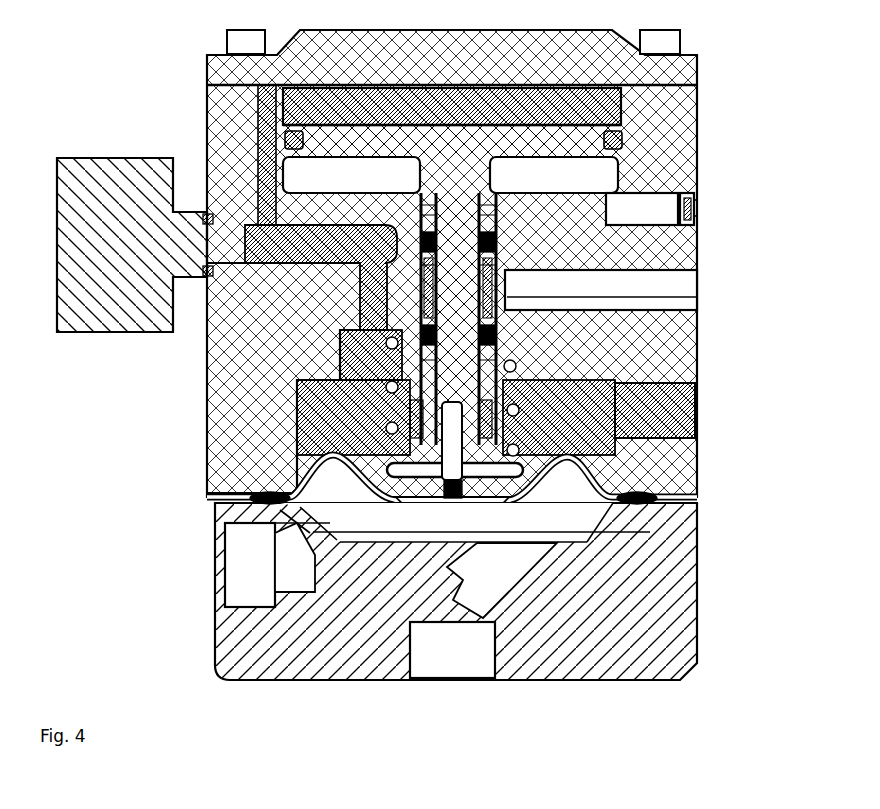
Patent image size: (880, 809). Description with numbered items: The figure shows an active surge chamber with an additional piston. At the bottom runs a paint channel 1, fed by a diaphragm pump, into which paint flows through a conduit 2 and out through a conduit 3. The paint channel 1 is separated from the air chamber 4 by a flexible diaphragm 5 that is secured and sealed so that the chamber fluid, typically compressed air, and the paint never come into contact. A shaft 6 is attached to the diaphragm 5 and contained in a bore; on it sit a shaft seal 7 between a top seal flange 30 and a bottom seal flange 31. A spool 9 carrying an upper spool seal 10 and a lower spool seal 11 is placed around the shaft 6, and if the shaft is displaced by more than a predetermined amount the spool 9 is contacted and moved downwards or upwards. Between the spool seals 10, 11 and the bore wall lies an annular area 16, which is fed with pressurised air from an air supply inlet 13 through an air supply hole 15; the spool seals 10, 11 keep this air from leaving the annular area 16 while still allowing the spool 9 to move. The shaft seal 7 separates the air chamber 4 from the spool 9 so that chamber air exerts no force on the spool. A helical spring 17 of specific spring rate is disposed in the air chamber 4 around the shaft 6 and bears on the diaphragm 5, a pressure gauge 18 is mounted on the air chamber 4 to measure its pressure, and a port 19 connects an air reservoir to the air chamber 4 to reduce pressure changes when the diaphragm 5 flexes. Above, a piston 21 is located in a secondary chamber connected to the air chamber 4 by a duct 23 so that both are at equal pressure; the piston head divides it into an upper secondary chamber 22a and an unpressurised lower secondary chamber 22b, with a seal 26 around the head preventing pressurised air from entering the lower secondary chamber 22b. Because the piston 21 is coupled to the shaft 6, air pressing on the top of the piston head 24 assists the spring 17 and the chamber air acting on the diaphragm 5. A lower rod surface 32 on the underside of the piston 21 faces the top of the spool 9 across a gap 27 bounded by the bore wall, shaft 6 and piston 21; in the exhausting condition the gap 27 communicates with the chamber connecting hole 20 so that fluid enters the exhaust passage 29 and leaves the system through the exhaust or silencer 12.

The paint channel 1 is at (452, 493).
The conduit 2 is at (483, 610).
The conduit 3 is at (270, 558).
The air chamber 4 is at (559, 418).
The flexible diaphragm 5 is at (470, 456).
The shaft 6 is at (457, 298).
The shaft seal 7 is at (517, 369).
The spool 9 is at (697, 297).
The upper spool seal 10 is at (496, 238).
The lower spool seal 11 is at (500, 332).
The exhaust 12 is at (697, 208).
The air supply inlet 13 is at (601, 290).
The air supply hole 15 is at (500, 292).
The annular area 16 is at (302, 277).
The spring 17 is at (390, 386).
The pressure gauge 18 is at (135, 245).
The port 19 is at (655, 410).
The chamber connecting hole 20 is at (418, 243).
The piston 21 is at (452, 141).
The upper secondary chamber 22a is at (452, 106).
The lower secondary chamber 22b is at (554, 175).
The duct 23 is at (258, 163).
The top of the piston head 24 is at (457, 126).
The seal 26 is at (285, 140).
The gap 27 is at (480, 215).
The exhaust passage 29 is at (642, 209).
The top seal flange 30 is at (386, 344).
The bottom seal flange 31 is at (420, 397).
The lower rod surface 32 is at (428, 240).